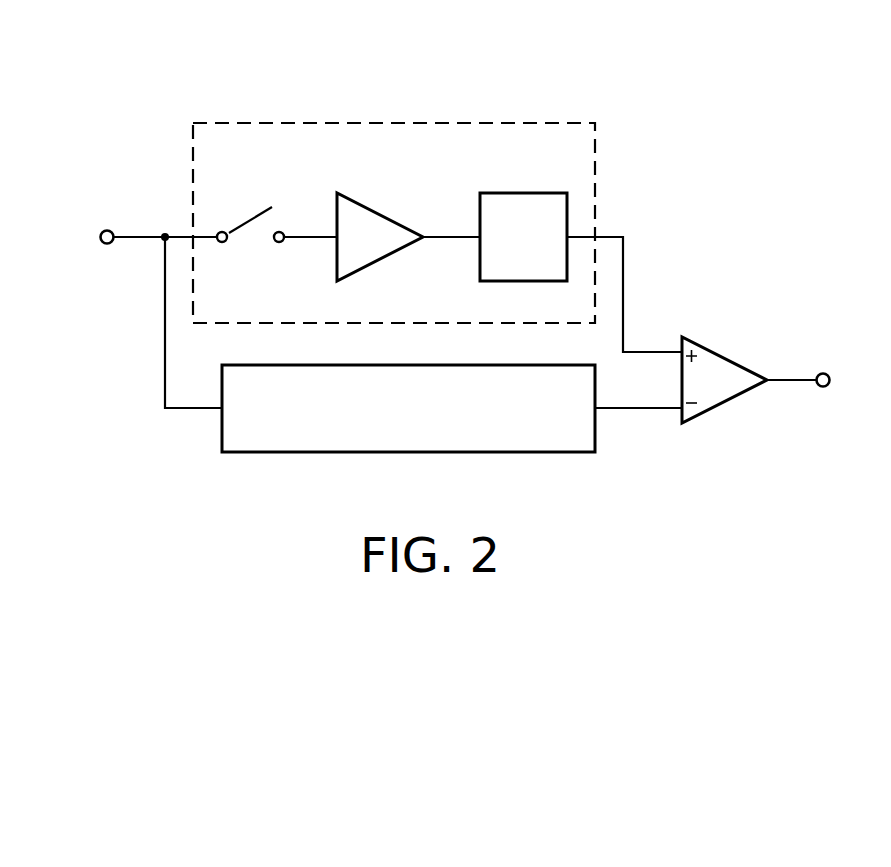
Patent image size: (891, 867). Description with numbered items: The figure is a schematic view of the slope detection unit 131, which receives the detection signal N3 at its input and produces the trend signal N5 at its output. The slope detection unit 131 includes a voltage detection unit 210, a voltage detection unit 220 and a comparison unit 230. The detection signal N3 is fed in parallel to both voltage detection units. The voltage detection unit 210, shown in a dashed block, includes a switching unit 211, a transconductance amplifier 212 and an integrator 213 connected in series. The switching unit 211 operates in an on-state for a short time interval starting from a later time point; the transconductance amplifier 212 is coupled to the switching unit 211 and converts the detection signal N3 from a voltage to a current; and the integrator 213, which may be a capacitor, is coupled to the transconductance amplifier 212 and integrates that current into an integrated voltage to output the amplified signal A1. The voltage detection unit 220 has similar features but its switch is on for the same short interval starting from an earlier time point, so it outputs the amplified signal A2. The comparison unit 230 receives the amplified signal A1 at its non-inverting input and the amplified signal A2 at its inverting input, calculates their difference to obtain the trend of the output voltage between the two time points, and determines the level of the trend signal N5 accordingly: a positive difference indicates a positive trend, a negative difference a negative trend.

The slope detection unit 131 is at (765, 124).
The voltage detection unit 210 is at (393, 122).
The switching unit 211 is at (250, 243).
The transconductance amplifier 212 is at (383, 213).
The integrator 213 is at (522, 192).
The voltage detection unit 220 is at (385, 440).
The comparison unit 230 is at (724, 356).
The detection signal N3 is at (141, 315).
The trend signal N5 is at (848, 381).
The amplified signal A1 is at (625, 293).
The amplified signal A2 is at (637, 411).